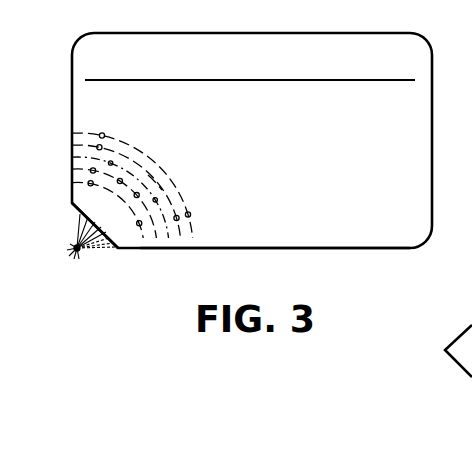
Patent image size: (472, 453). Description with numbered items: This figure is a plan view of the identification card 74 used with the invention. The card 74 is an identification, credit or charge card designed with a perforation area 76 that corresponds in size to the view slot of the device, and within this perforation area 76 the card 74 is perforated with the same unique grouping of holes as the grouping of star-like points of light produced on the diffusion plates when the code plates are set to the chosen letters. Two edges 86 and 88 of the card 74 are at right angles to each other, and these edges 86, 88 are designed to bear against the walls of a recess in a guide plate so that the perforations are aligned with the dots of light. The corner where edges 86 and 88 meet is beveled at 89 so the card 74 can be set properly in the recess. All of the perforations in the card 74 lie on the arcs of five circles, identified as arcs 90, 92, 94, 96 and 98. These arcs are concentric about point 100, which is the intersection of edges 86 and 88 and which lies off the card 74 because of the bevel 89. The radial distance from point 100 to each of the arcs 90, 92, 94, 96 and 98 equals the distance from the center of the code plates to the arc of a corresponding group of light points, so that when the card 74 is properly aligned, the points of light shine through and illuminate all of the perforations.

The card 74 is at (361, 33).
The perforation area 76 is at (143, 174).
The edge of card 86 is at (72, 133).
The edge of card 88 is at (278, 249).
The bevel 89 is at (72, 205).
The arc 90 is at (141, 239).
The arc 92 is at (157, 239).
The arc 94 is at (169, 239).
The arc 96 is at (181, 239).
The arc 98 is at (194, 236).
The point 100 is at (70, 248).